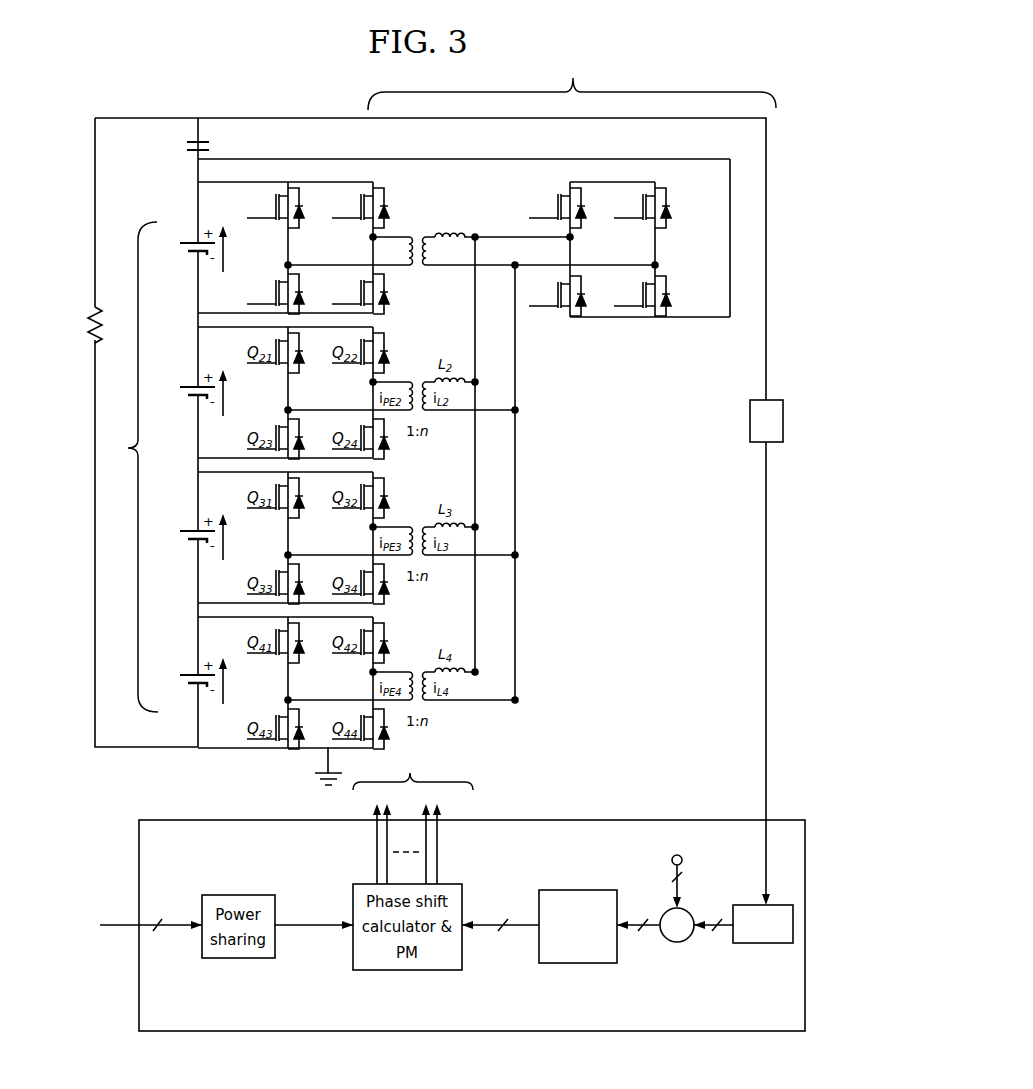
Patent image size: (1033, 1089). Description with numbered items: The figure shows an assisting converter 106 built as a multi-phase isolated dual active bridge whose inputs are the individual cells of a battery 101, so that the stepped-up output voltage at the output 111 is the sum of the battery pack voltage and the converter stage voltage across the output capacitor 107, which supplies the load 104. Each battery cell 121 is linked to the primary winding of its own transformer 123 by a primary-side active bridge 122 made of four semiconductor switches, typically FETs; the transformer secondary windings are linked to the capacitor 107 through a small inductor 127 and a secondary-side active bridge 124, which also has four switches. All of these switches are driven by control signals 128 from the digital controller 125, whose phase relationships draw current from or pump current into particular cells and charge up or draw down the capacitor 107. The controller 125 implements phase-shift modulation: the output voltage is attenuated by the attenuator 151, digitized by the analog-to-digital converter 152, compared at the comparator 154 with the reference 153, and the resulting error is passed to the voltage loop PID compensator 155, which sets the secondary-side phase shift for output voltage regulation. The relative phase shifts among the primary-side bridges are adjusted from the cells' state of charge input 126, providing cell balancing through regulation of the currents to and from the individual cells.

The battery 101 is at (128, 448).
The load 104 is at (87, 333).
The converter 106 is at (572, 80).
The output capacitor 107 is at (212, 143).
The output voltage node 111 is at (102, 118).
The battery cell 121 is at (184, 254).
The active bridge 122 is at (320, 217).
The transformer 123 is at (432, 283).
The active bridge 124 is at (622, 243).
The digital controller 125 is at (546, 820).
The state of charge input 126 is at (168, 928).
The inductor 127 is at (458, 223).
The control signals 128 is at (413, 817).
The attenuator 151 is at (750, 413).
The analog-to-digital converter 152 is at (750, 904).
The reference 153 is at (672, 857).
The comparator 154 is at (681, 942).
The voltage loop PID compensator 155 is at (560, 963).